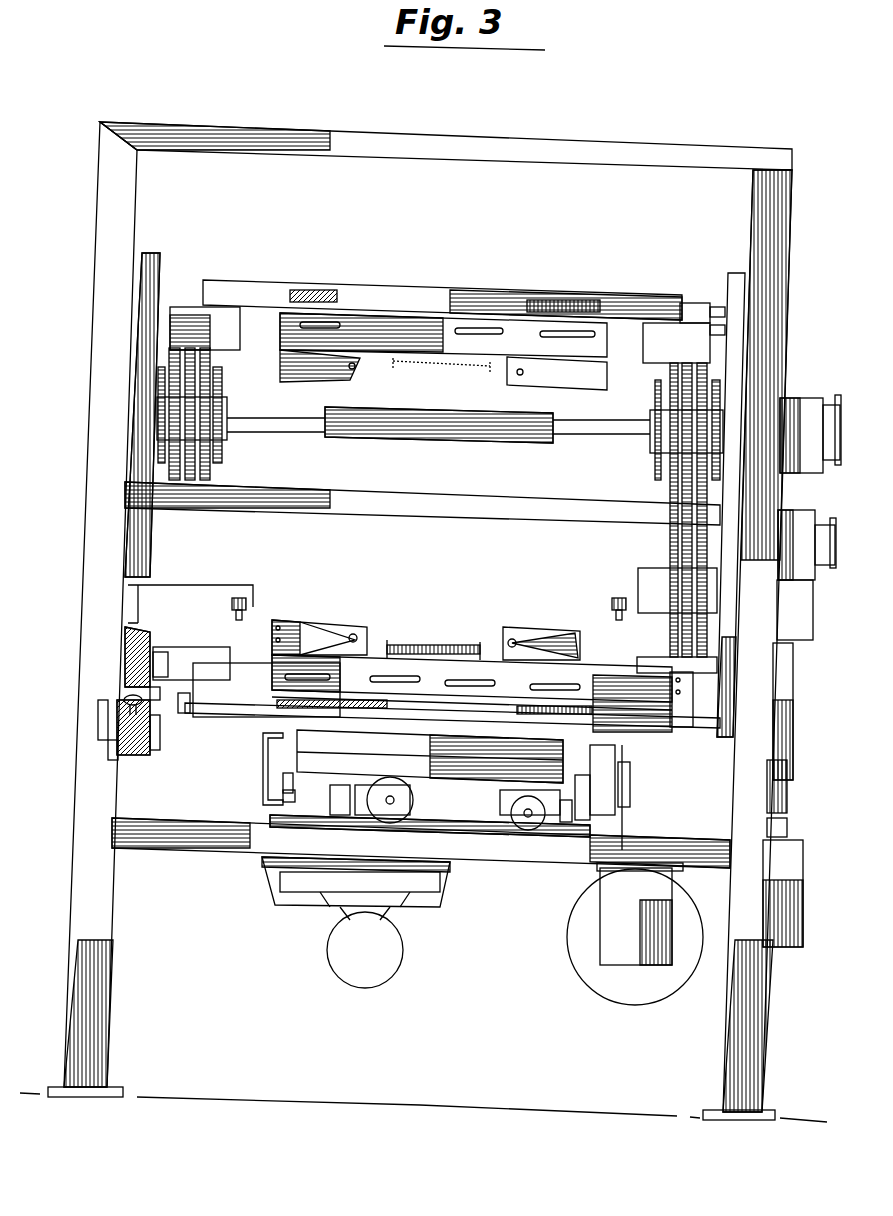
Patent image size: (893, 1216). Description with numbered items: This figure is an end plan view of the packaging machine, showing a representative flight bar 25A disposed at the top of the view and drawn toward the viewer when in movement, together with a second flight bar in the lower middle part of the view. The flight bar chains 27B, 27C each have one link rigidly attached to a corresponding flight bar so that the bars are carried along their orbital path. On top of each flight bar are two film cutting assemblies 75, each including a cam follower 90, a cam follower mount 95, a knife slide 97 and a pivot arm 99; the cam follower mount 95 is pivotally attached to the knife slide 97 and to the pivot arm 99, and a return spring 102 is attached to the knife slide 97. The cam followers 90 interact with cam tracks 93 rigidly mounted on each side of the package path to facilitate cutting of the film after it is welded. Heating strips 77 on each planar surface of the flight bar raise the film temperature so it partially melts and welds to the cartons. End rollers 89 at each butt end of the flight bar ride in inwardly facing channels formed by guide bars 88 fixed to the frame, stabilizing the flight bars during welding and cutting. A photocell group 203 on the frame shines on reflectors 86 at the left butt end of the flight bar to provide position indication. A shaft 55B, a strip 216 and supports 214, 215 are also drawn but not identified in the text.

The flight bar 25A is at (570, 257).
The shaft 55B is at (413, 420).
The flight bar chain 27C is at (670, 498).
The flight bar chain 27B is at (683, 550).
The cam track 93 is at (253, 610).
The cam follower mount 95 is at (260, 618).
The pivot arm 99 is at (330, 628).
The film cutting assembly 75 is at (355, 606).
The knife slide 97 is at (372, 657).
The return spring 102 is at (398, 642).
The end roller 89 is at (165, 667).
The cam follower 90 is at (232, 610).
The guide strip 216 is at (118, 690).
The heating strip 77 is at (273, 703).
The reflector 86 is at (183, 713).
The guide bar 88 is at (157, 682).
The photocell group 203 is at (150, 753).
The support 215 is at (78, 745).
The support 214 is at (100, 715).